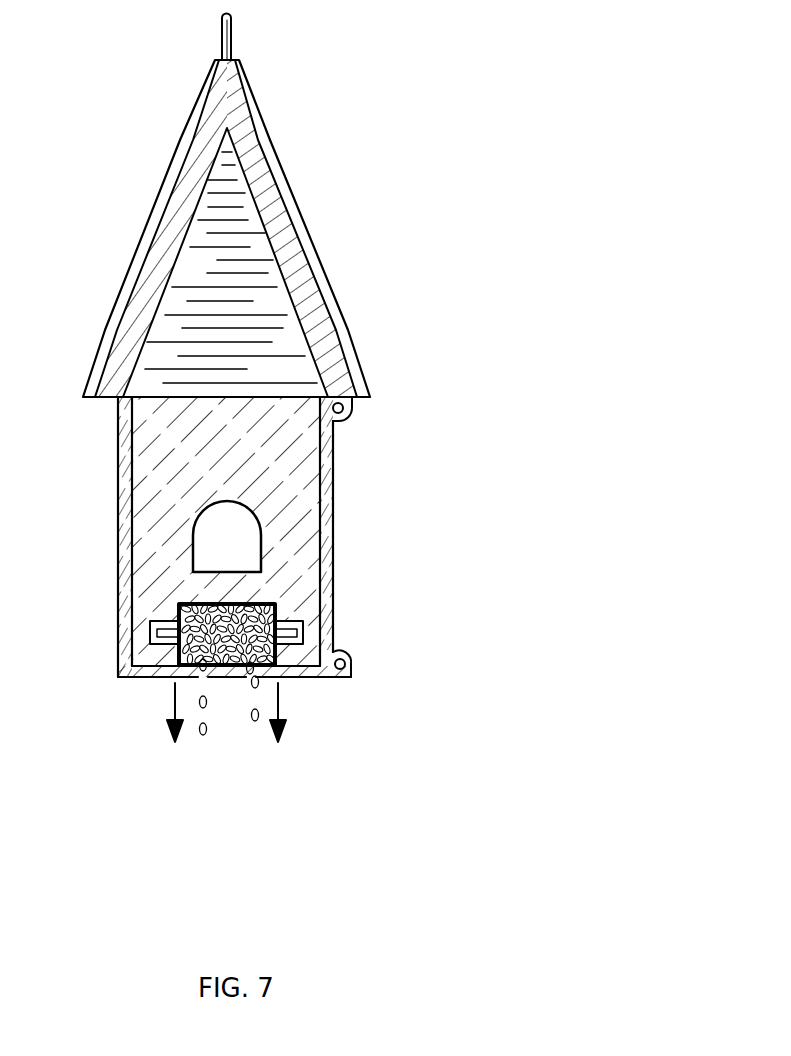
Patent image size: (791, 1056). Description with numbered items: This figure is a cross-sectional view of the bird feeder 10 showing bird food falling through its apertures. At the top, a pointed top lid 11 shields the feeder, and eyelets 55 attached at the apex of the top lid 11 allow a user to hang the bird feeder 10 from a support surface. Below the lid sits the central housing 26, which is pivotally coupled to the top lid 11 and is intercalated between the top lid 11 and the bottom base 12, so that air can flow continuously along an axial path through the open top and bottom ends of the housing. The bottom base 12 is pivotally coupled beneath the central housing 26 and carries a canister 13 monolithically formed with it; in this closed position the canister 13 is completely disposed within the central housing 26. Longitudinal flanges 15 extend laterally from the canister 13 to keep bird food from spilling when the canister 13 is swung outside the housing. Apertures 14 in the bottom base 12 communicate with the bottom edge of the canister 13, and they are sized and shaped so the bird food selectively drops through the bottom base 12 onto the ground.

The bird feeder 10 is at (245, 401).
The top lid 11 is at (298, 250).
The bottom base 12 is at (121, 669).
The canister 13 is at (280, 600).
The apertures 14 is at (250, 674).
The longitudinal flanges 15 is at (155, 623).
The central housing 26 is at (310, 483).
The eyelets 55 is at (226, 32).